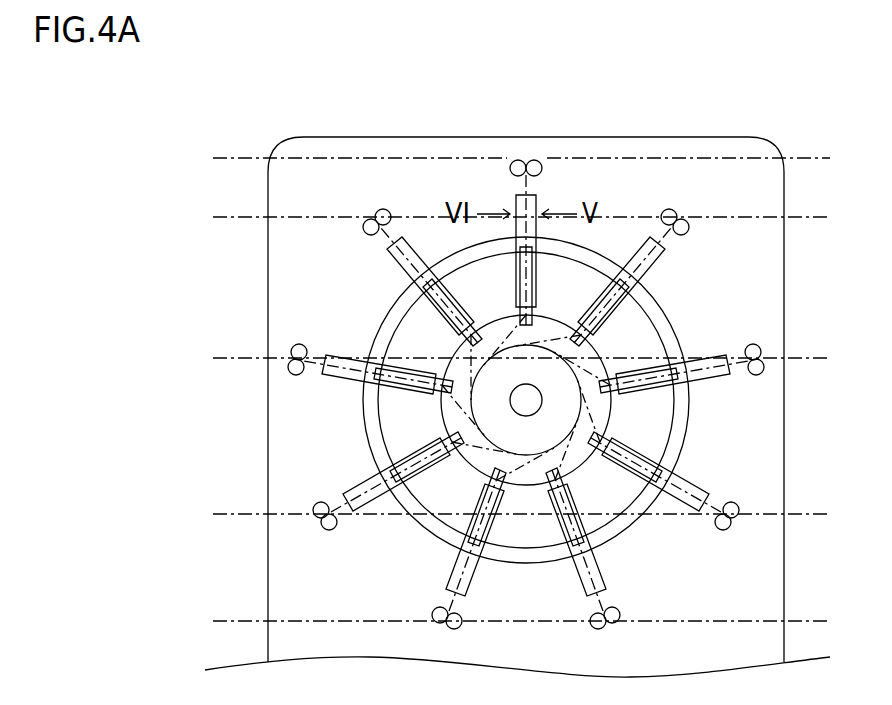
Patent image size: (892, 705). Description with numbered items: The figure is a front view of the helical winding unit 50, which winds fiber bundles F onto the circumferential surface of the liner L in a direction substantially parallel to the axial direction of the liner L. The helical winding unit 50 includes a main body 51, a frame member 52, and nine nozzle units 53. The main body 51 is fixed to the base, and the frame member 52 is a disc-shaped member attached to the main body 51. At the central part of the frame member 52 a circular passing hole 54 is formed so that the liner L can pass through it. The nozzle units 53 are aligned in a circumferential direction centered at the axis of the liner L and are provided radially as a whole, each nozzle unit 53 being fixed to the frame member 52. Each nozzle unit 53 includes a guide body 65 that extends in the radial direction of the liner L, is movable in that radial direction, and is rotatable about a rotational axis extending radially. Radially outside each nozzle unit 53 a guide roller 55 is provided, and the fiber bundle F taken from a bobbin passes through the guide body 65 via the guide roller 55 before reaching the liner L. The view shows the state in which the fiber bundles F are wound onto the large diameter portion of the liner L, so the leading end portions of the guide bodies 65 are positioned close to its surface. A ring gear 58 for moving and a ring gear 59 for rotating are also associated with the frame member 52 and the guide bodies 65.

The helical winding unit 50 is at (226, 118).
The main body 51 is at (416, 145).
The frame member 52 is at (613, 498).
The nozzle unit 53 is at (345, 348).
The passing hole 54 is at (546, 346).
The guide roller 55 is at (297, 372).
The ring gear for moving 58 is at (431, 536).
The ring gear for rotating 59 is at (431, 536).
The guide body 65 is at (447, 382).
The fiber bundle F is at (230, 218).
The liner L is at (570, 408).